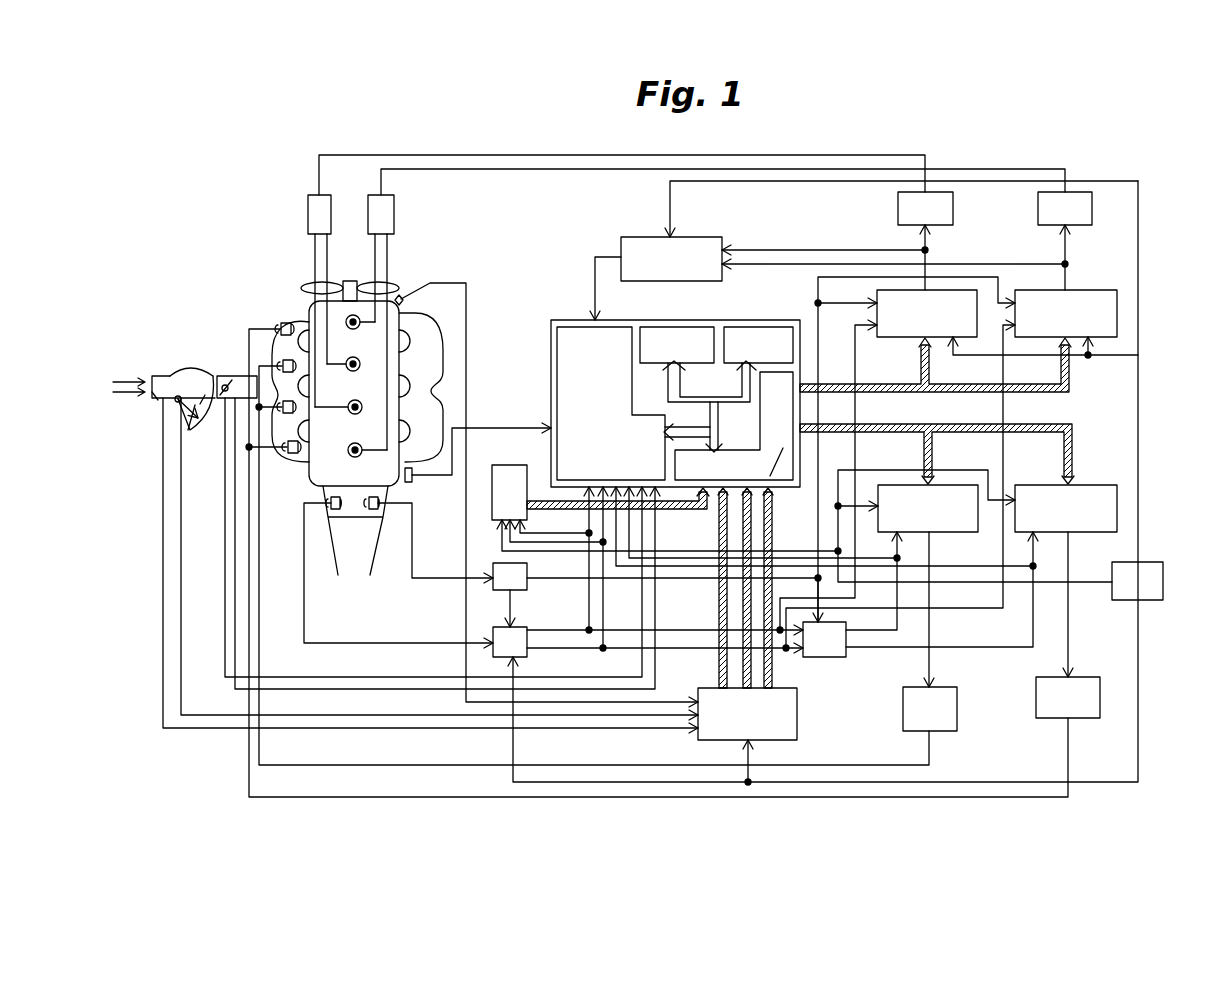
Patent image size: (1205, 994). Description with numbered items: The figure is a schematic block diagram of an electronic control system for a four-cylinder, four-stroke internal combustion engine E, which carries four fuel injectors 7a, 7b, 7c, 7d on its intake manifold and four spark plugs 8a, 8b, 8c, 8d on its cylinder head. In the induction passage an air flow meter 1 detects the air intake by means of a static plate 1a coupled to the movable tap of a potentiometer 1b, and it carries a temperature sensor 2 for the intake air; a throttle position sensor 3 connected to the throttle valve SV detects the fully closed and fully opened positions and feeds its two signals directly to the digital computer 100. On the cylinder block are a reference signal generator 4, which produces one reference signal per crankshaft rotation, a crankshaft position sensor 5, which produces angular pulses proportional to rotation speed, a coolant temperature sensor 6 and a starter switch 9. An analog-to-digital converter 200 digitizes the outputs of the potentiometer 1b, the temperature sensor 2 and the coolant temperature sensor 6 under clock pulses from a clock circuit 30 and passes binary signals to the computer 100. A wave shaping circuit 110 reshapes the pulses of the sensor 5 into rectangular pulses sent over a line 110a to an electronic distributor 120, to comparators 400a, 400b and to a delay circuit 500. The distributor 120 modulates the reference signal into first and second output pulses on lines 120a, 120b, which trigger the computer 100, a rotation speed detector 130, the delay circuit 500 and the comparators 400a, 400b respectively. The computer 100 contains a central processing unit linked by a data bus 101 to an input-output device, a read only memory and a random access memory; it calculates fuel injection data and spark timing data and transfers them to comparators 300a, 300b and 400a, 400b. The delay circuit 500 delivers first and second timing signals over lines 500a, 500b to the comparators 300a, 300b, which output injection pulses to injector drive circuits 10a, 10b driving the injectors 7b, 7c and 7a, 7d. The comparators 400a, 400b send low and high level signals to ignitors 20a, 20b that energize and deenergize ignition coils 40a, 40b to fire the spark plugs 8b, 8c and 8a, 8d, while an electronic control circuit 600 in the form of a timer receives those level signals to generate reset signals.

The air flow meter 1 is at (178, 372).
The static plate 1a is at (190, 380).
The potentiometer 1b is at (192, 420).
The temperature sensor 2 is at (158, 400).
The throttle position sensor 3 is at (215, 402).
The throttle valve SV is at (228, 376).
The reference signal generator 4 is at (335, 509).
The crankshaft position sensor 5 is at (372, 509).
The coolant temperature sensor 6 is at (404, 301).
The fuel injector 7a is at (282, 323).
The fuel injector 7b is at (279, 381).
The fuel injector 7c is at (282, 422).
The fuel injector 7d is at (294, 453).
The spark plug 8a is at (358, 328).
The spark plug 8b is at (358, 370).
The spark plug 8c is at (358, 413).
The spark plug 8d is at (358, 456).
The starter switch 9 is at (412, 478).
The internal combustion engine E is at (308, 482).
The ignition coil 40a is at (308, 210).
The ignition coil 40b is at (394, 210).
The injector drive circuit 10a is at (947, 717).
The injector drive circuit 10b is at (1086, 707).
The ignitor 20a is at (945, 220).
The ignitor 20b is at (1084, 220).
The clock circuit 30 is at (1150, 592).
The digital computer 100 is at (712, 320).
The data bus 101 is at (698, 378).
The wave shaping circuit 110 is at (526, 588).
The line 110a is at (815, 300).
The electronic distributor 120 is at (526, 654).
The line 120a is at (582, 636).
The line 120b is at (582, 652).
The rotation speed detector 130 is at (526, 503).
The analog-to-digital converter 200 is at (767, 725).
The comparator 300a is at (954, 519).
The comparator 300b is at (1092, 519).
The comparator 400a is at (953, 324).
The comparator 400b is at (1092, 324).
The delay circuit 500 is at (843, 650).
The line 500a is at (868, 632).
The line 500b is at (980, 650).
The electronic control circuit 600 is at (693, 271).